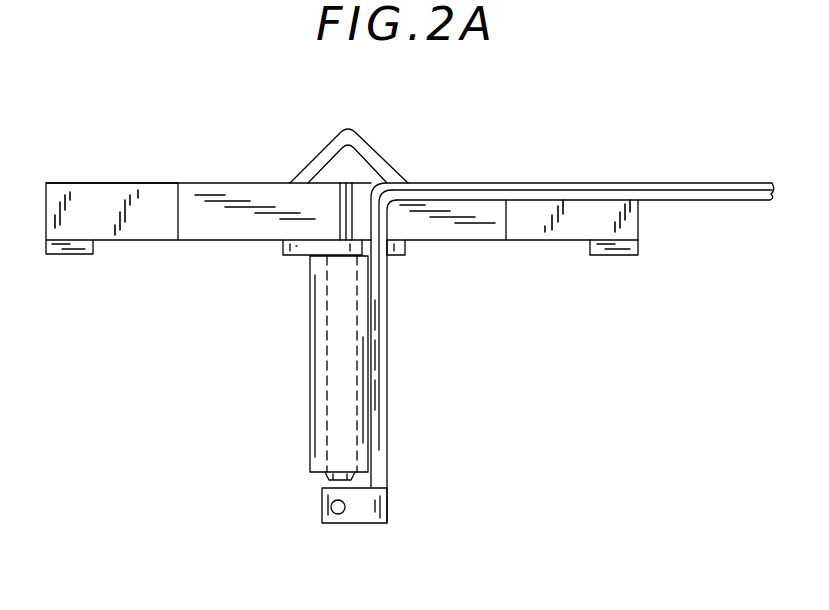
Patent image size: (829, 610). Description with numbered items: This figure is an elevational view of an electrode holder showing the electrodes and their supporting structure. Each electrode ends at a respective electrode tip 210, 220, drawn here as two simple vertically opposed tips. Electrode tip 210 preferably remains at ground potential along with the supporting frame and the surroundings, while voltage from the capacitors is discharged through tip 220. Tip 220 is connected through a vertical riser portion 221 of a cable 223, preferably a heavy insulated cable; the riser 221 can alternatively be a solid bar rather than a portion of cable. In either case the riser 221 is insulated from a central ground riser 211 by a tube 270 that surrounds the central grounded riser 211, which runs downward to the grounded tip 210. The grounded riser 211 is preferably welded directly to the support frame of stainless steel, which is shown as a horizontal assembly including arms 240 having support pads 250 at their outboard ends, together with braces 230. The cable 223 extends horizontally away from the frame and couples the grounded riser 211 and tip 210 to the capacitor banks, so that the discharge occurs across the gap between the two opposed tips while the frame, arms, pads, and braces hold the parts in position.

The electrode tip 210 is at (325, 478).
The central ground riser 211 is at (330, 317).
The electrode tip 220 is at (348, 508).
The vertical riser portion 221 is at (388, 363).
The cable 223 is at (698, 183).
The braces 230 is at (251, 236).
The arms 240 is at (113, 182).
The support pads 250 is at (68, 256).
The tube 270 is at (307, 400).